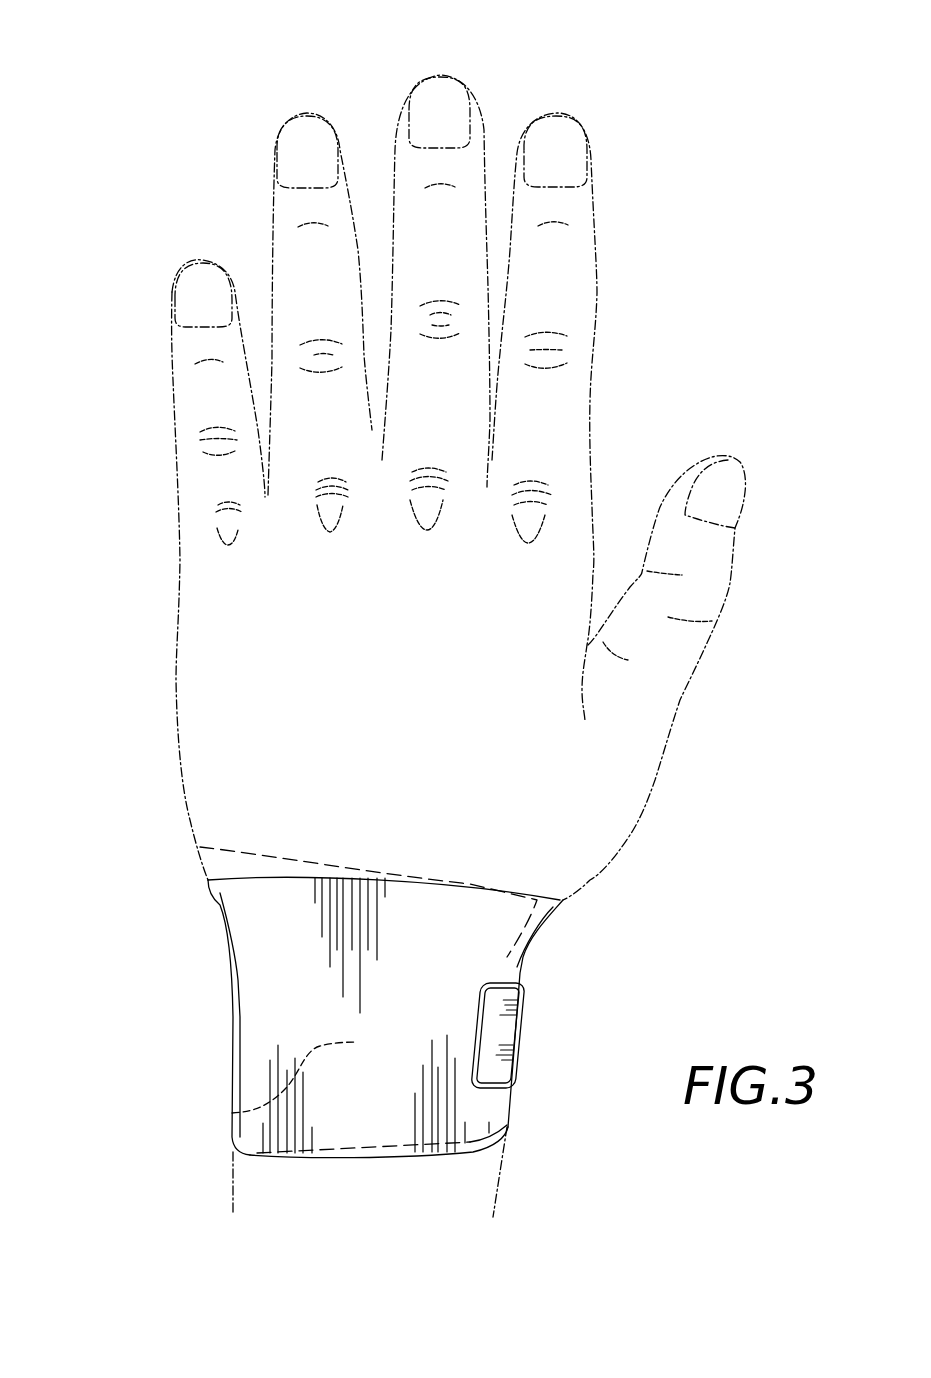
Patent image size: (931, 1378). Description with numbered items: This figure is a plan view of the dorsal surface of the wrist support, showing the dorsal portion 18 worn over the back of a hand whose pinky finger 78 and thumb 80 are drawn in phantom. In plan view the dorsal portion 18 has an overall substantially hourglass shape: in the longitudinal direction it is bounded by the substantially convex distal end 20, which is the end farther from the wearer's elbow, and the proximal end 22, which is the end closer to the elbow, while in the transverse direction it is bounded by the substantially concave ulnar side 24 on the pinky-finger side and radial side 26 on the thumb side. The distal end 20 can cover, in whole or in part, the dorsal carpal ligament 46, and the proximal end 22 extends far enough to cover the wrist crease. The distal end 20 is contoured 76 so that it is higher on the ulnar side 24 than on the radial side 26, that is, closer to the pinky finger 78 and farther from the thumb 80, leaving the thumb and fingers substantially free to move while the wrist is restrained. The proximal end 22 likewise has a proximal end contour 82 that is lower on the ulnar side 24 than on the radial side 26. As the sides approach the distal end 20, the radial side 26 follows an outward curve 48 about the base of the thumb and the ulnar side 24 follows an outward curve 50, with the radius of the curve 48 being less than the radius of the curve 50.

The dorsal portion 18 is at (392, 1033).
The distal end 20 is at (340, 877).
The proximal end 22 is at (355, 1165).
The ulnar side 24 is at (221, 1016).
The radial side 26 is at (538, 969).
The dorsal carpal ligament 46 is at (232, 1113).
The outward curve 48 is at (545, 925).
The outward curve 50 is at (220, 910).
The distal contour 76 is at (460, 877).
The pinky finger 78 is at (344, 516).
The thumb 80 is at (700, 553).
The proximal end contour 82 is at (475, 1155).